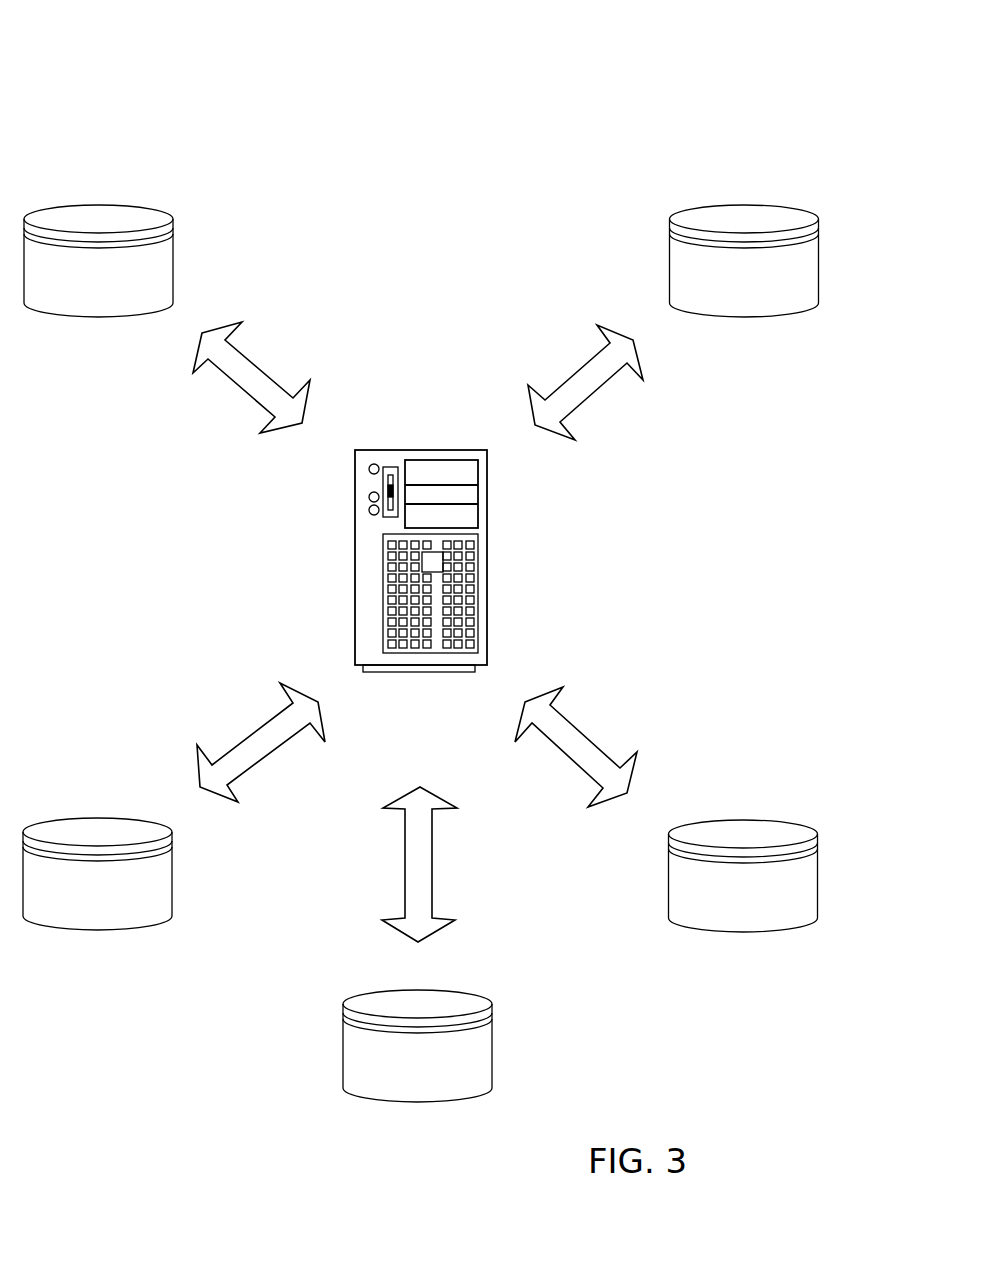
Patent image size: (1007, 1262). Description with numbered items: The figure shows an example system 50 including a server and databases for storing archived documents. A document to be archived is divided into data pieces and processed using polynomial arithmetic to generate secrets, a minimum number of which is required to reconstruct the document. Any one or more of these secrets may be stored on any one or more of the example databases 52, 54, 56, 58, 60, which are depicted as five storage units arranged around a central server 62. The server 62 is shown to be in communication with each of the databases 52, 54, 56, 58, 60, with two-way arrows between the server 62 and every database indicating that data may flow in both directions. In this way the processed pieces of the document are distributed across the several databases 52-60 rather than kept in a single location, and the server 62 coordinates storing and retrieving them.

The distributed system 50 is at (228, 110).
The database 52 is at (178, 260).
The database 54 is at (820, 260).
The database 56 is at (175, 873).
The database 58 is at (747, 818).
The database 60 is at (493, 1046).
The server 62 is at (492, 560).